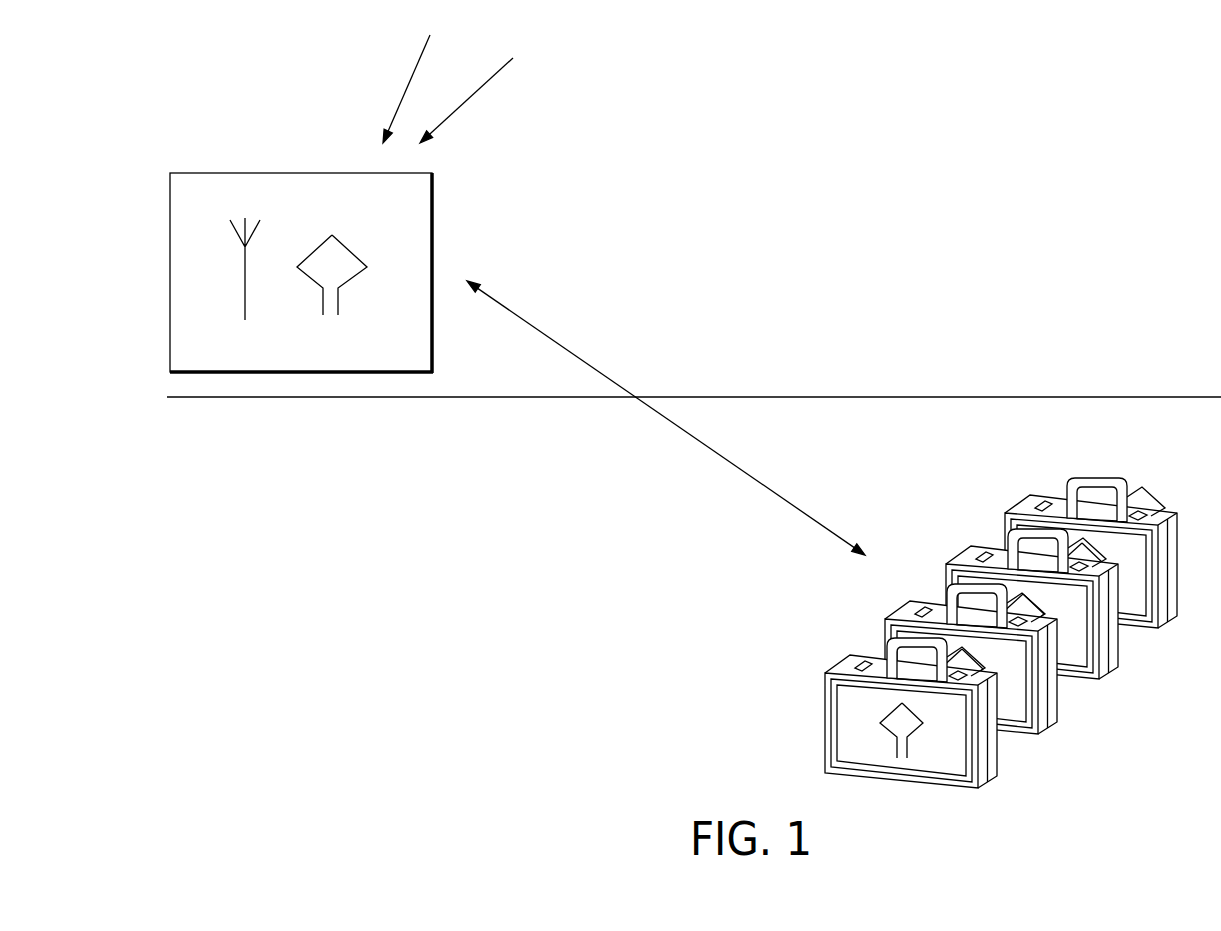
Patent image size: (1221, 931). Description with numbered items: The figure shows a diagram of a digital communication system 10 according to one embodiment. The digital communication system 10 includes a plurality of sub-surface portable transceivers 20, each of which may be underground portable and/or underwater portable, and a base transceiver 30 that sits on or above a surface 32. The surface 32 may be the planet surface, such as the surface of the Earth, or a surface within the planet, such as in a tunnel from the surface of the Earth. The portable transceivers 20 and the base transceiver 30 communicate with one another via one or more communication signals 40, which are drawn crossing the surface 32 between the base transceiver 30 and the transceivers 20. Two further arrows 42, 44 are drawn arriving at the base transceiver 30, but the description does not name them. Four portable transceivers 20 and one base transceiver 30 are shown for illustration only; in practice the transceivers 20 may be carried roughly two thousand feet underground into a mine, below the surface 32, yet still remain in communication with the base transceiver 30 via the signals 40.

The digital communication system 10 is at (863, 131).
The sub-surface portable transceiver 20 is at (1167, 622).
The base transceiver 30 is at (208, 172).
The surface 32 is at (929, 396).
The communication signal 40 is at (728, 460).
The incoming signal 42 is at (413, 80).
The incoming signal 44 is at (467, 100).